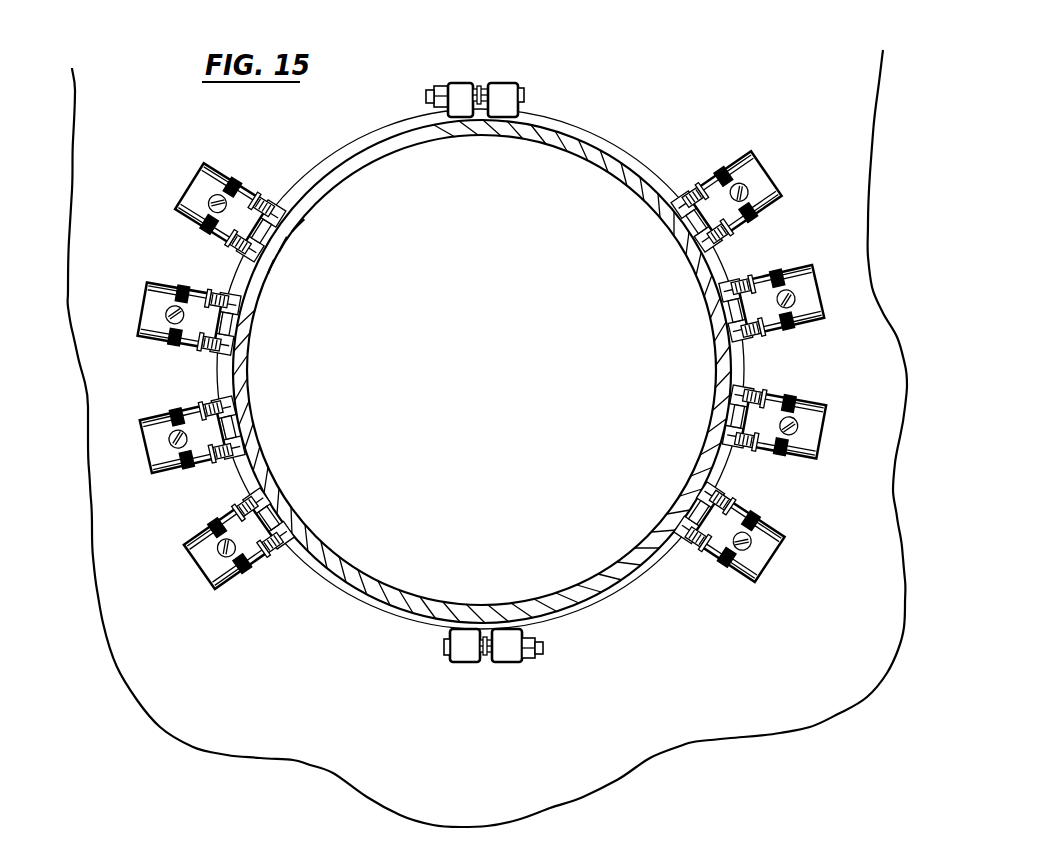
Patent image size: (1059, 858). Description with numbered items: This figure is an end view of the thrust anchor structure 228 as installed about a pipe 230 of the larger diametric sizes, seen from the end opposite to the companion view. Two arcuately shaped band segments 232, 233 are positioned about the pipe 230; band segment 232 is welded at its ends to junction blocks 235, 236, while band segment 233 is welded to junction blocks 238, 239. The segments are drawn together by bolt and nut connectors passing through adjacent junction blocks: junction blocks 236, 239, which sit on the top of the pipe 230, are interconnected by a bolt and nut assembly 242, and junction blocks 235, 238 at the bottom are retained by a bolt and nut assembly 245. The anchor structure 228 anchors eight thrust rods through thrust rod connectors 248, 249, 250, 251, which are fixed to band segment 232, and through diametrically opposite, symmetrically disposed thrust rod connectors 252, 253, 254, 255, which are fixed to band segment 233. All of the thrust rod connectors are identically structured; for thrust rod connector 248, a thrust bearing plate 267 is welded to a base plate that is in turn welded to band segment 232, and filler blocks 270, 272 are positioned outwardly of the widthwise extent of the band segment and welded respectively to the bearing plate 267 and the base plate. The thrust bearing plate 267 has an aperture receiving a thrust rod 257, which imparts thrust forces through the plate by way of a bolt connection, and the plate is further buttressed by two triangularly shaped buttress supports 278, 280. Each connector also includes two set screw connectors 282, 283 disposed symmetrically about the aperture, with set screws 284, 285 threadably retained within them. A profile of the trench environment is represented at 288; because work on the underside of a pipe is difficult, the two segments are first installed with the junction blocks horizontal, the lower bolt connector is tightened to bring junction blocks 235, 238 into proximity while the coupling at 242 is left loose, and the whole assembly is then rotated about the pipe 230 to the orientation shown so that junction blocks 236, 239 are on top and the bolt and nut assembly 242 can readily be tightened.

The anchor structure 228 is at (688, 40).
The pipe 230 is at (602, 180).
The band segment 232 is at (398, 128).
The band segment 233 is at (610, 140).
The junction block 235 is at (467, 657).
The junction block 236 is at (462, 95).
The junction block 238 is at (508, 656).
The junction block 239 is at (503, 92).
The bolt and nut assembly 242 is at (526, 95).
The bolt and nut assembly 245 is at (445, 646).
The thrust rod connector 248 is at (240, 167).
The thrust rod connector 249 is at (153, 288).
The thrust rod connector 250 is at (165, 410).
The thrust rod connector 251 is at (192, 534).
The thrust rod connector 252 is at (790, 527).
The thrust rod connector 253 is at (816, 396).
The thrust rod connector 254 is at (797, 262).
The thrust rod connector 255 is at (768, 155).
The thrust rod 257 is at (200, 180).
The thrust bearing plate 267 is at (197, 196).
The filler block 270 is at (295, 248).
The filler block 272 is at (262, 214).
The buttress support 278 is at (245, 199).
The buttress support 280 is at (196, 226).
The set screw connector 282 is at (303, 227).
The set screw connector 283 is at (289, 262).
The set screw 284 is at (252, 185).
The set screw 285 is at (226, 250).
The trench environment profile 288 is at (310, 765).